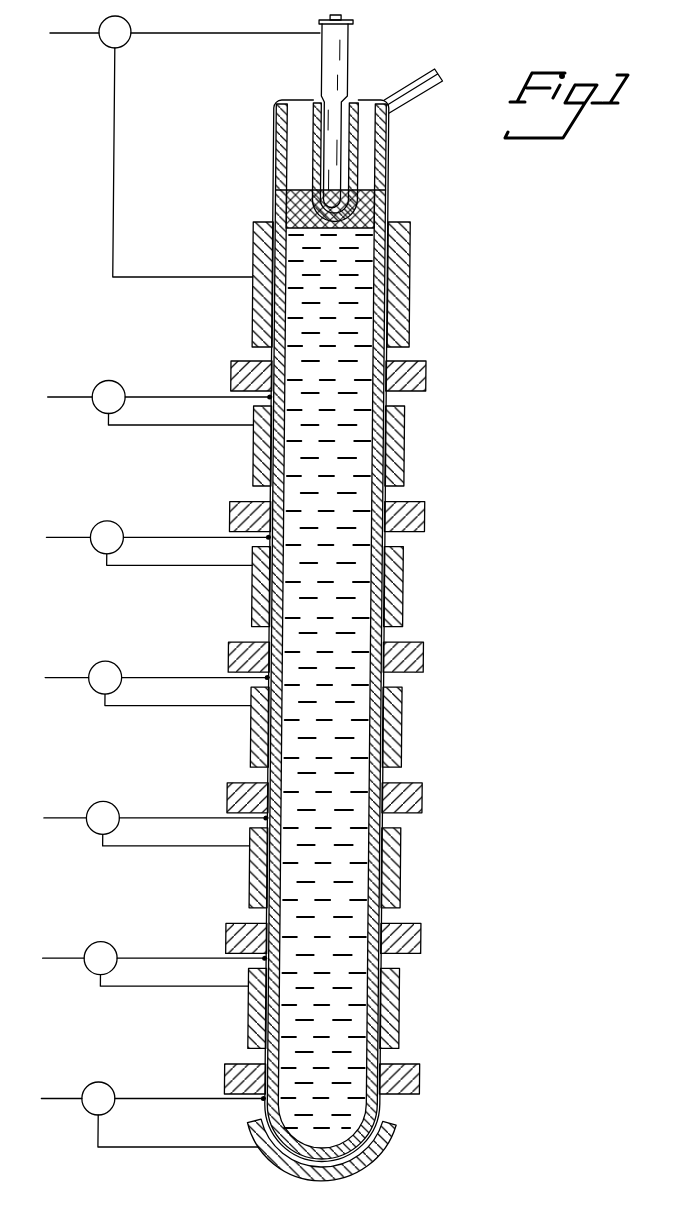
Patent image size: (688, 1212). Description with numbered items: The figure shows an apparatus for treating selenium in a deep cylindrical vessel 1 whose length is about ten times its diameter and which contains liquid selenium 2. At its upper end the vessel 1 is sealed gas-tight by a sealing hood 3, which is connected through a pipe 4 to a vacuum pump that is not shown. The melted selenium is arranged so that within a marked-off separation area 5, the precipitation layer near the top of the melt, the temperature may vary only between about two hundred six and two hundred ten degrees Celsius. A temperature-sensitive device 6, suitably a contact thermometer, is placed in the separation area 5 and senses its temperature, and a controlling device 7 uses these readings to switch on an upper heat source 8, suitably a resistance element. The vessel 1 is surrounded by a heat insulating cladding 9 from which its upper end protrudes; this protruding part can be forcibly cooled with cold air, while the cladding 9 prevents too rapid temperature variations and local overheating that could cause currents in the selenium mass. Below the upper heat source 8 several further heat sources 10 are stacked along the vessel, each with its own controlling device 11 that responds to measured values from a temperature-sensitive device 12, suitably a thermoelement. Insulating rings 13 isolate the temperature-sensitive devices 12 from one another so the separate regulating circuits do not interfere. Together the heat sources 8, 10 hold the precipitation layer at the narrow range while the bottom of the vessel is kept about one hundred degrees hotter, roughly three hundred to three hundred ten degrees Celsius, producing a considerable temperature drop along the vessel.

The cylindrical vessel 1 is at (377, 262).
The liquid selenium 2 is at (364, 402).
The sealing hood 3 is at (358, 106).
The pipe 4 is at (440, 72).
The separation area 5 is at (374, 203).
The temperature-sensitive device 6 is at (343, 53).
The controlling device 7 is at (127, 42).
The heat source 8 is at (254, 249).
The heat insulating cladding 9 is at (388, 292).
The heat sources 10 is at (254, 450).
The controlling device 11 is at (122, 386).
The temperature-sensitive device 12 is at (263, 400).
The insulating rings 13 is at (414, 368).